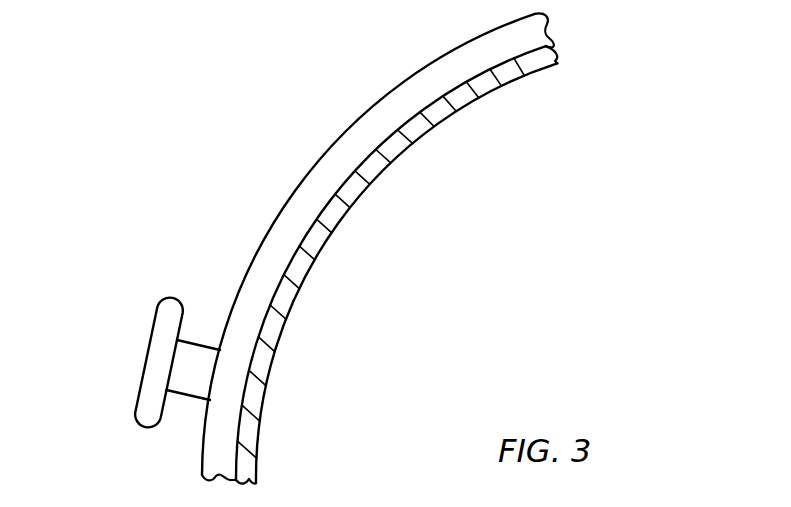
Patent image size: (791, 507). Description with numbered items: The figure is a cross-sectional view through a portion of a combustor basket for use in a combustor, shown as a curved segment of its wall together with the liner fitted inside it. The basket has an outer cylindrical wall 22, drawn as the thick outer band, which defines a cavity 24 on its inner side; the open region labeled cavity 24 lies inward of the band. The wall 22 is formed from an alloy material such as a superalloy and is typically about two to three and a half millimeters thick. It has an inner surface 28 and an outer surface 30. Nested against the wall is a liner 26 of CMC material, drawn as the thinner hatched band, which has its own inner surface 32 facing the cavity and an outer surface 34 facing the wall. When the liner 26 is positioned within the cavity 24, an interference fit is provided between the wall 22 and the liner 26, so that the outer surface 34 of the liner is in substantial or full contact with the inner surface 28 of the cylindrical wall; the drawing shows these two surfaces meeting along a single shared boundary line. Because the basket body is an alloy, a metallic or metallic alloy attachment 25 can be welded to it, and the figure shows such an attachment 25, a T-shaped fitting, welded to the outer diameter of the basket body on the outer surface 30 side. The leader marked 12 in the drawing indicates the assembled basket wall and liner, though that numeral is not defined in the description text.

The strap assembly 12 is at (368, 244).
The outer cylindrical wall 22 is at (378, 242).
The cavity 24 is at (433, 320).
The attachment 25 is at (145, 362).
The liner 26 is at (263, 362).
The inner surface 28 is at (478, 70).
The outer surface 30 is at (385, 95).
The inner surface 32 is at (400, 147).
The outer surface 34 is at (348, 211).